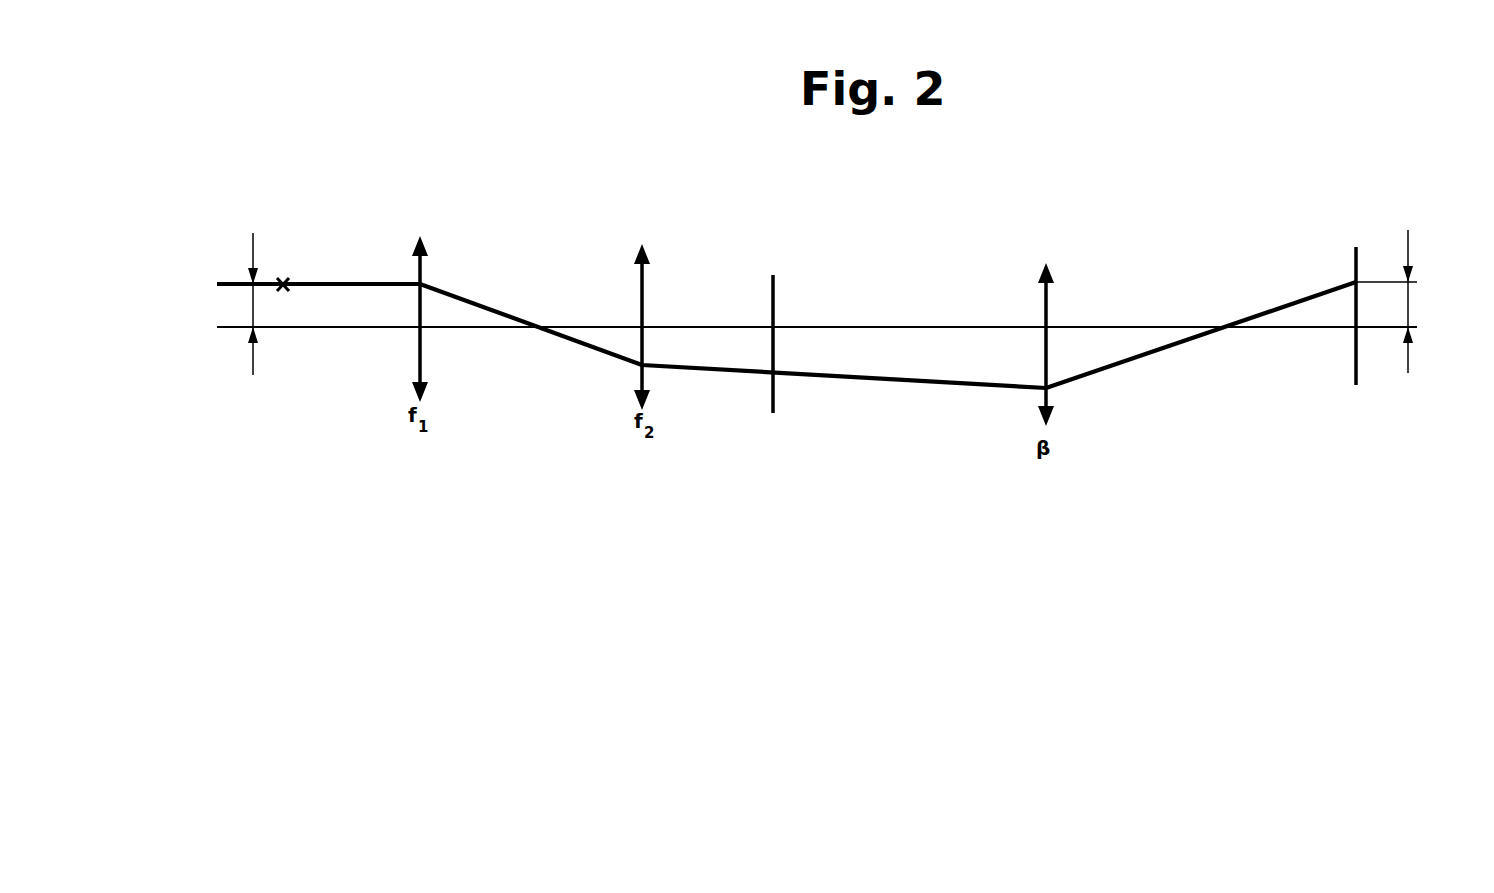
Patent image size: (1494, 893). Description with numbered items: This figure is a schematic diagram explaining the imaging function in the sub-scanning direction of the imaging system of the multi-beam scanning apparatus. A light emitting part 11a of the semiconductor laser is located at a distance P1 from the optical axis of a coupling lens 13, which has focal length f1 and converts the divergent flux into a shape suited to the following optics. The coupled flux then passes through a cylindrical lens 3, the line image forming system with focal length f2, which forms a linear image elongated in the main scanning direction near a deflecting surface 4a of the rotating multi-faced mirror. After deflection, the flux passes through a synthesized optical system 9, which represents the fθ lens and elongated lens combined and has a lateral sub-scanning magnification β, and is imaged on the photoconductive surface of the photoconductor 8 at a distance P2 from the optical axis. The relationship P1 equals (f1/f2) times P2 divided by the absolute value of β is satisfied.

The light emitting part 11a is at (283, 277).
The coupling lens 13 is at (425, 278).
The cylindrical lens 3 is at (638, 305).
The deflecting surface 4a is at (770, 309).
The synthesized optical system 9 is at (1043, 312).
The photoconductor 8 is at (1352, 265).
The distance of the light emitting part from the optical axis P1 is at (253, 309).
The distance between imaging position and optical axis P2 is at (1411, 310).